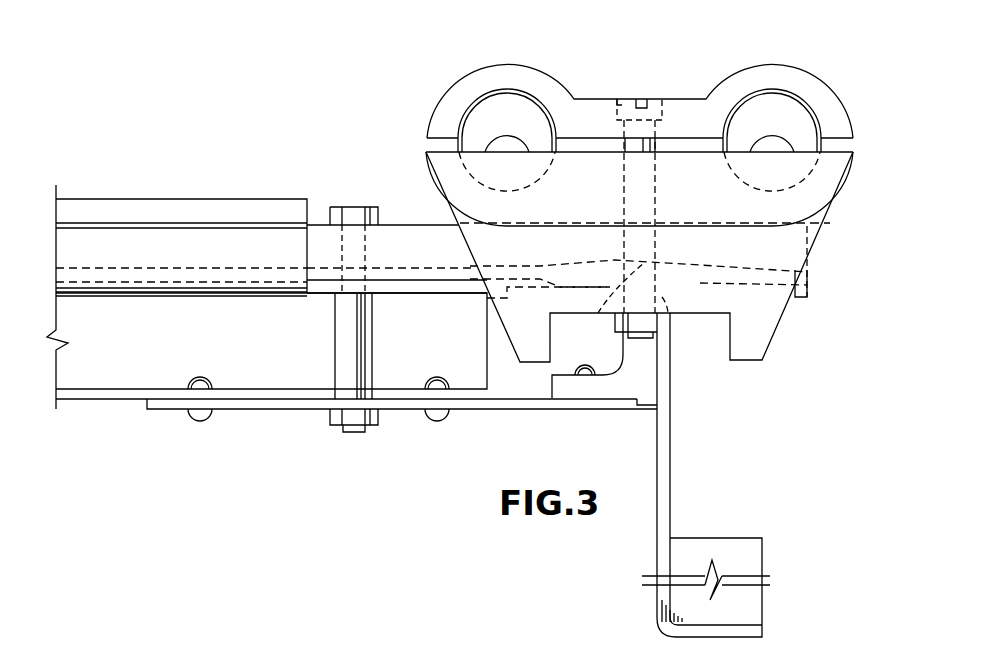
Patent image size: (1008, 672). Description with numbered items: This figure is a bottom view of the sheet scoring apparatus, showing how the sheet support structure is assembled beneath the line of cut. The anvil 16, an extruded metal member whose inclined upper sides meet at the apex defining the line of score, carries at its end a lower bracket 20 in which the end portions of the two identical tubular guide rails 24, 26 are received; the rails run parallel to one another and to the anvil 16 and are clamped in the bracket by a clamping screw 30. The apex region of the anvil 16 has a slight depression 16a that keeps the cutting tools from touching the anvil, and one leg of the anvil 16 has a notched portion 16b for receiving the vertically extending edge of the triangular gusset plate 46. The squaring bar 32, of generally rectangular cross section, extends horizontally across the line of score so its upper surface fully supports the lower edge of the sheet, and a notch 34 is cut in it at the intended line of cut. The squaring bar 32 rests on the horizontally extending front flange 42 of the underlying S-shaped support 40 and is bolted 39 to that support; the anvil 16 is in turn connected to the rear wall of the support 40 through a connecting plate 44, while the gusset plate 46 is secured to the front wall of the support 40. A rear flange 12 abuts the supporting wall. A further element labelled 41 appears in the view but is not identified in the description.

The rear flange 12 is at (367, 513).
The anvil 16 is at (706, 298).
The depression 16a is at (614, 313).
The notched portion 16b is at (556, 268).
The lower bracket 20 is at (563, 84).
The tubular guide rail 24 is at (515, 103).
The tubular guide rail 26 is at (795, 112).
The clamping screw 30 is at (645, 98).
The squaring bar 32 is at (407, 224).
The notch 34 is at (660, 222).
The bolt 39 is at (340, 208).
The S-shaped support 40 is at (180, 354).
The bolt 41 is at (340, 327).
The front flange 42 is at (176, 243).
The connecting plate 44 is at (525, 412).
The gusset plate 46 is at (118, 268).